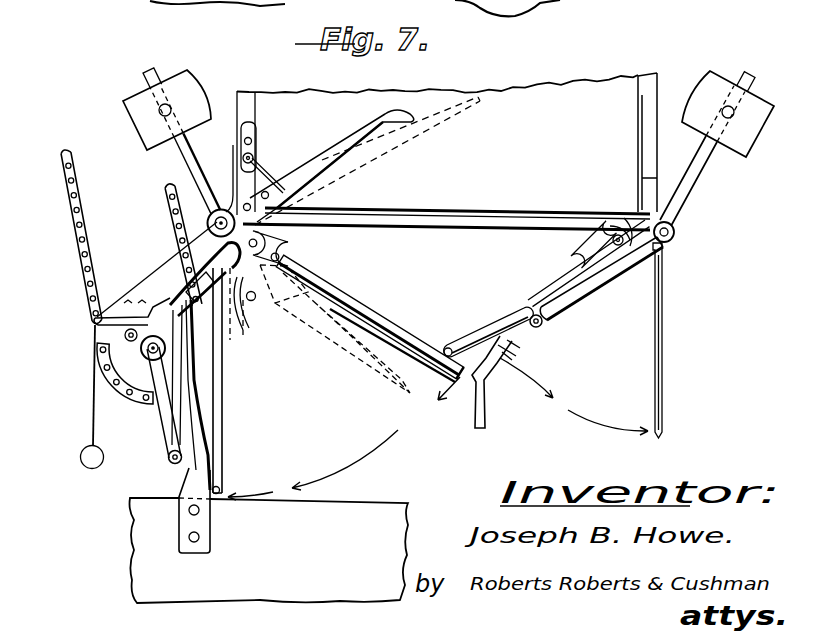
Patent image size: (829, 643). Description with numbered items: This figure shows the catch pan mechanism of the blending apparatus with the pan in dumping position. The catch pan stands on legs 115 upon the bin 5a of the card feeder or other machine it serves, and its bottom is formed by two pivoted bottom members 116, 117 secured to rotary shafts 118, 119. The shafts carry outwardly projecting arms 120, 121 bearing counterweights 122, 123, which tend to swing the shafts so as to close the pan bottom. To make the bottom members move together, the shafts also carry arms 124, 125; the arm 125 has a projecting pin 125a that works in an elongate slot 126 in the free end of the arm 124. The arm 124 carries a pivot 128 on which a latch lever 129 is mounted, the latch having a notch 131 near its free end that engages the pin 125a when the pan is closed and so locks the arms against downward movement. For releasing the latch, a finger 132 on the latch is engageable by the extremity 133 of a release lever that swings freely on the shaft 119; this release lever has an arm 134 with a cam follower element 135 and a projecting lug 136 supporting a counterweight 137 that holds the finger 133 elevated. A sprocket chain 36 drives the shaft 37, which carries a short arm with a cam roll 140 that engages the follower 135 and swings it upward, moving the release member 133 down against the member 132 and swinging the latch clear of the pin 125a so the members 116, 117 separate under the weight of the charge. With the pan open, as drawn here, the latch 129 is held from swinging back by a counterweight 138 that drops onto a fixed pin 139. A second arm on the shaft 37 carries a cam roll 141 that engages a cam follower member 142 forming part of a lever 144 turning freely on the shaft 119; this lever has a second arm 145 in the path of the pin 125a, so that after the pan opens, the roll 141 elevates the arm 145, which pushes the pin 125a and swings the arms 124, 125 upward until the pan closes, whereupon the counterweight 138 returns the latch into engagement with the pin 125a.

The bin 5a is at (360, 512).
The sprocket chain 36 is at (86, 245).
The shaft 37 is at (160, 353).
The legs 115 is at (179, 478).
The pivoted bottom member 116 is at (660, 345).
The pivoted bottom member 117 is at (235, 392).
The rotary shaft 118 is at (676, 232).
The rotary shaft 119 is at (208, 219).
The outwardly projecting arm 120 is at (690, 190).
The outwardly projecting arm 121 is at (197, 172).
The counterweight 122 is at (713, 70).
The counterweight 123 is at (183, 88).
The arm 124 is at (552, 293).
The arm 125 is at (400, 267).
The projecting pin 125a is at (450, 348).
The elongate slot 126 is at (495, 320).
The pivot 128 is at (544, 324).
The latch lever 129 is at (512, 353).
The notch 131 is at (446, 404).
The finger 132 is at (486, 424).
The extremity of release lever 133 is at (362, 160).
The arm of release lever 134 is at (168, 280).
The cam follower element 135 is at (114, 333).
The projecting lug 136 is at (107, 315).
The counterweight 137 is at (71, 397).
The counterweight 138 is at (593, 245).
The fixed pin 139 is at (630, 217).
The cam roll 140 is at (141, 349).
The cam roll 141 is at (168, 453).
The cam follower member 142 is at (190, 421).
The lever 144 is at (320, 329).
The second arm 145 is at (400, 333).